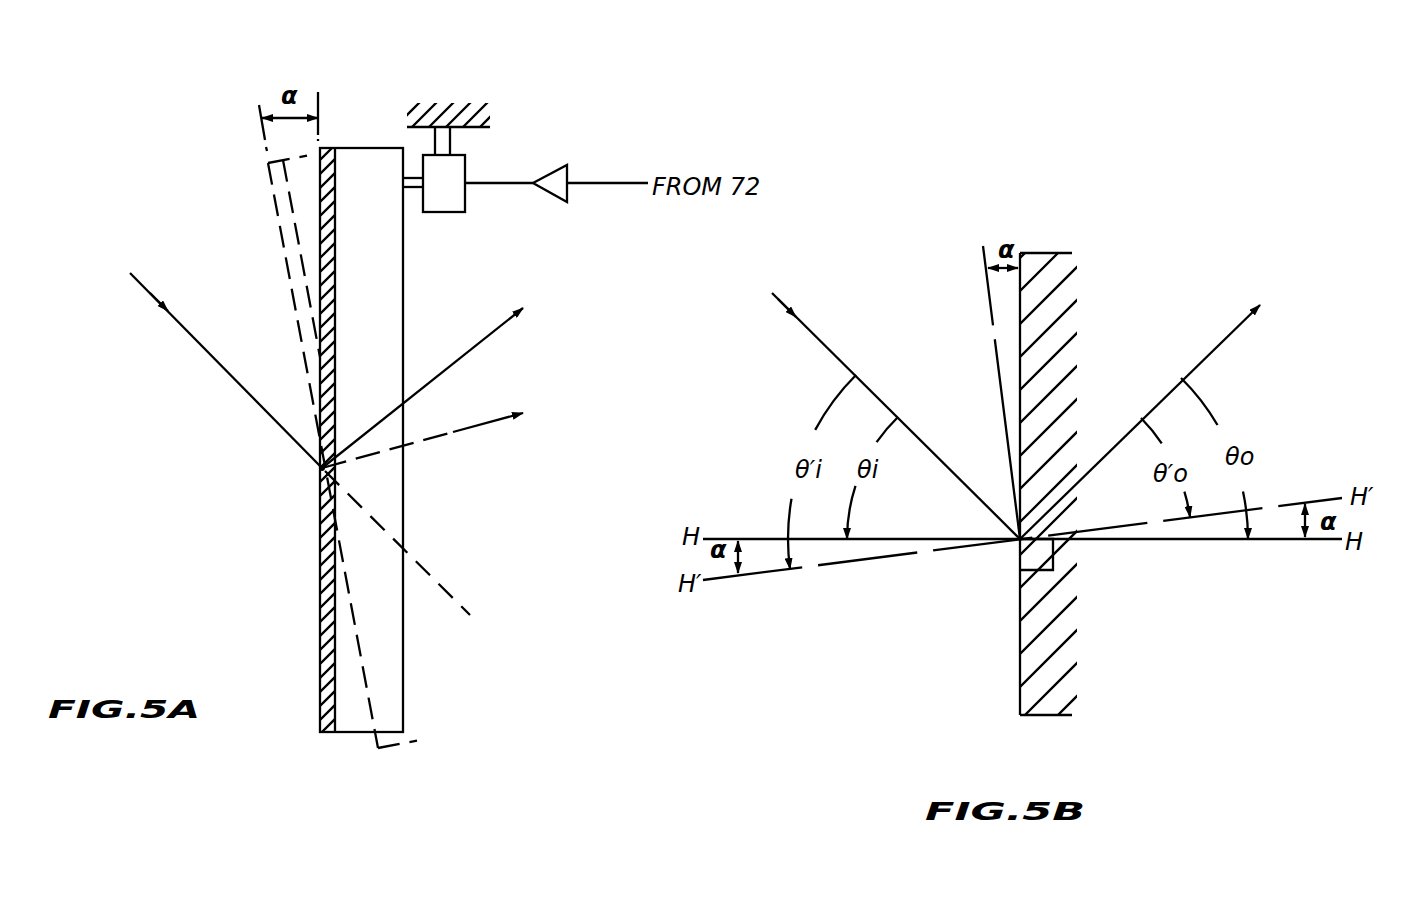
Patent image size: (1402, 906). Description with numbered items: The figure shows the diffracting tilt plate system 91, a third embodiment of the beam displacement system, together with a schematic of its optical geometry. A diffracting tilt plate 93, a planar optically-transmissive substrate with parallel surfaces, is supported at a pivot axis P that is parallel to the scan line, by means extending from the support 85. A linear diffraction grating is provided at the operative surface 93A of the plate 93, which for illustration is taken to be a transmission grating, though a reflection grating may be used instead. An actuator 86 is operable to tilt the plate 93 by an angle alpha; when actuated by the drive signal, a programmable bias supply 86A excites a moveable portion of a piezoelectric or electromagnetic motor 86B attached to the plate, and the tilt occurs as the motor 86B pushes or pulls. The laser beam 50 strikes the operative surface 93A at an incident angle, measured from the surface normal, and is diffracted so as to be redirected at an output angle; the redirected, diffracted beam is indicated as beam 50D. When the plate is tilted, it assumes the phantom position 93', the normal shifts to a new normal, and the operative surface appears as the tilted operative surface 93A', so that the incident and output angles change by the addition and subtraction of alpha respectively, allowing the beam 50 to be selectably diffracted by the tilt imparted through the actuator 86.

In FIG. 5A, the laser beam 50 is at (152, 292).
In FIG. 5B, the laser beam 50 is at (827, 345).
In FIG. 5A, the deflected light beam 50D is at (453, 433).
In FIG. 5A, the support 85 is at (484, 132).
In FIG. 5A, the actuator 86 is at (528, 205).
In FIG. 5A, the programmable bias supply 86A is at (567, 170).
In FIG. 5A, the motor 86B is at (466, 198).
In FIG. 5A, the diffracting tilt plate system 91 is at (238, 103).
In FIG. 5A, the diffracting tilt plate 93 is at (409, 440).
In FIG. 5A, the operative surface 93A is at (281, 457).
In FIG. 5B, the operative surface 93A is at (976, 362).
In FIG. 5A, the tilted mirror position 93' is at (378, 481).
In FIG. 5B, the tilted operative surface 93A' is at (1065, 469).
In FIG. 5A, the pivot axis P is at (318, 472).